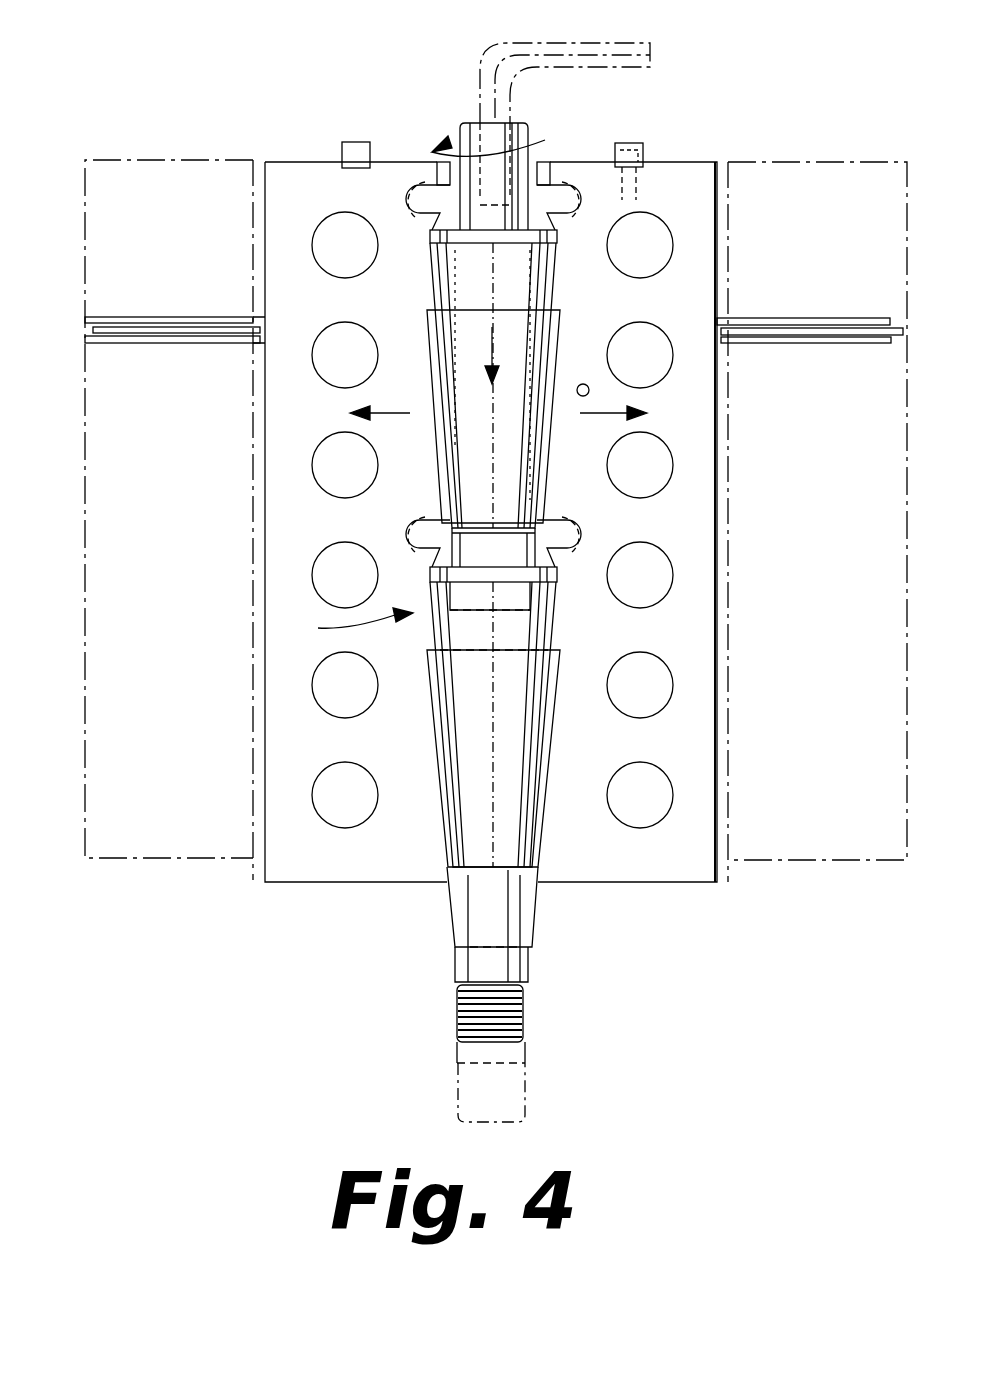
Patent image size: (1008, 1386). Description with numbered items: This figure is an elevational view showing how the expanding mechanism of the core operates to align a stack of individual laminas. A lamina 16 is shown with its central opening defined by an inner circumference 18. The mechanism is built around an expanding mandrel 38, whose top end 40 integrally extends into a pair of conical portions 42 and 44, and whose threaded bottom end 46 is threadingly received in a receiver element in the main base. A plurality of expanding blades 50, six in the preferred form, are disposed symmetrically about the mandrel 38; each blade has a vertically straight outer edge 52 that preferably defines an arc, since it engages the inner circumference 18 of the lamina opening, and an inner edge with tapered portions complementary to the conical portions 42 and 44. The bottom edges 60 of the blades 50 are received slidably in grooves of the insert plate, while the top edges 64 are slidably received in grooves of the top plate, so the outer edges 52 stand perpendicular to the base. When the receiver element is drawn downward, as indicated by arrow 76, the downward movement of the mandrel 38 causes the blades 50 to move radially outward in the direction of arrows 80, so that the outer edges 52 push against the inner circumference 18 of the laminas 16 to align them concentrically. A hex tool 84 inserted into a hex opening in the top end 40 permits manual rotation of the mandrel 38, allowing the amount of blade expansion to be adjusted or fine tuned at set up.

The lamina 16 is at (128, 316).
The inner circumference 18 is at (265, 323).
The expanding mandrel 38 is at (348, 627).
The top end 40 is at (432, 150).
The conical portion 42 is at (548, 270).
The conical portion 44 is at (528, 758).
The threaded bottom end 46 is at (508, 1018).
The expanding blade 50 is at (698, 738).
The outer edge 52 is at (262, 415).
The bottom edge 60 is at (390, 882).
The top edge 64 is at (295, 160).
The arrow 76 is at (492, 333).
The arrow 80 is at (385, 414).
The hex tool 84 is at (572, 43).